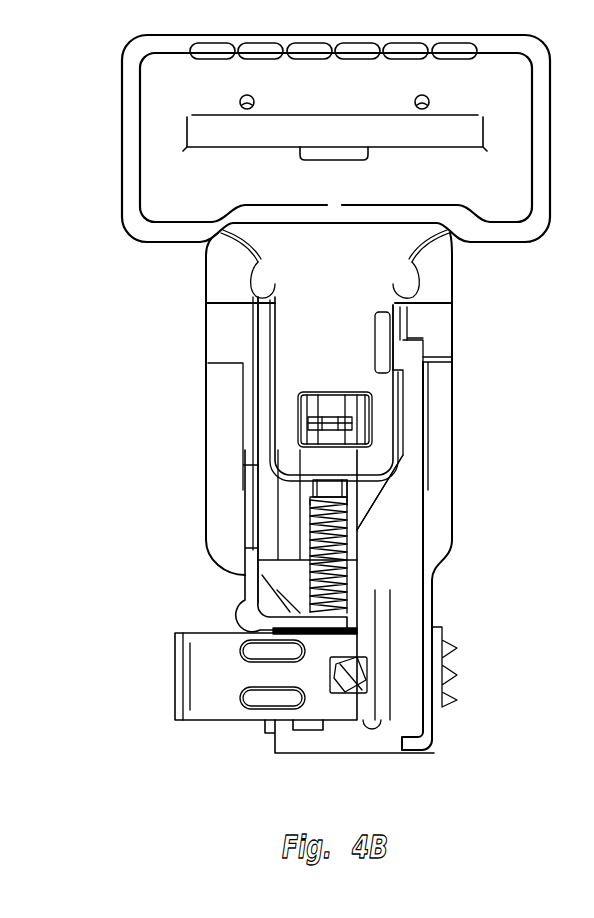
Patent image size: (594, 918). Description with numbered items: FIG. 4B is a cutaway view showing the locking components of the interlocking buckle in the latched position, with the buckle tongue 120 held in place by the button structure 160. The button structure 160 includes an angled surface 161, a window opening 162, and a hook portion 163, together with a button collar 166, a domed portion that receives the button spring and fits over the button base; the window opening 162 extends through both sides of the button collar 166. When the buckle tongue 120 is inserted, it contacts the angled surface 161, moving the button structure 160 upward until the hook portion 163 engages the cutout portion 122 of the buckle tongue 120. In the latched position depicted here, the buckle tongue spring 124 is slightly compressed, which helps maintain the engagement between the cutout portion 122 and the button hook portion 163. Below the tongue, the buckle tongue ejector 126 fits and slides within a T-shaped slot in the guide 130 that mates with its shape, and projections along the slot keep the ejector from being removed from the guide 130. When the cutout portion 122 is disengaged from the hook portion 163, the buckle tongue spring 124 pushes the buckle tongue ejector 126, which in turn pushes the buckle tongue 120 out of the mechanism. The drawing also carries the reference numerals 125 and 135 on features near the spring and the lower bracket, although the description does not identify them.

The buckle tongue 120 is at (347, 283).
The cutout portion 122 is at (392, 322).
The buckle tongue spring 124 is at (347, 540).
The spring retainer 125 is at (313, 500).
The buckle tongue ejector 126 is at (323, 483).
The guide 130 is at (267, 357).
The L-shaped bracket 135 is at (357, 597).
The button structure 160 is at (220, 722).
The angled surface 161 is at (393, 473).
The window opening 162 is at (348, 693).
The hook portion 163 is at (407, 352).
The button collar 166 is at (175, 672).